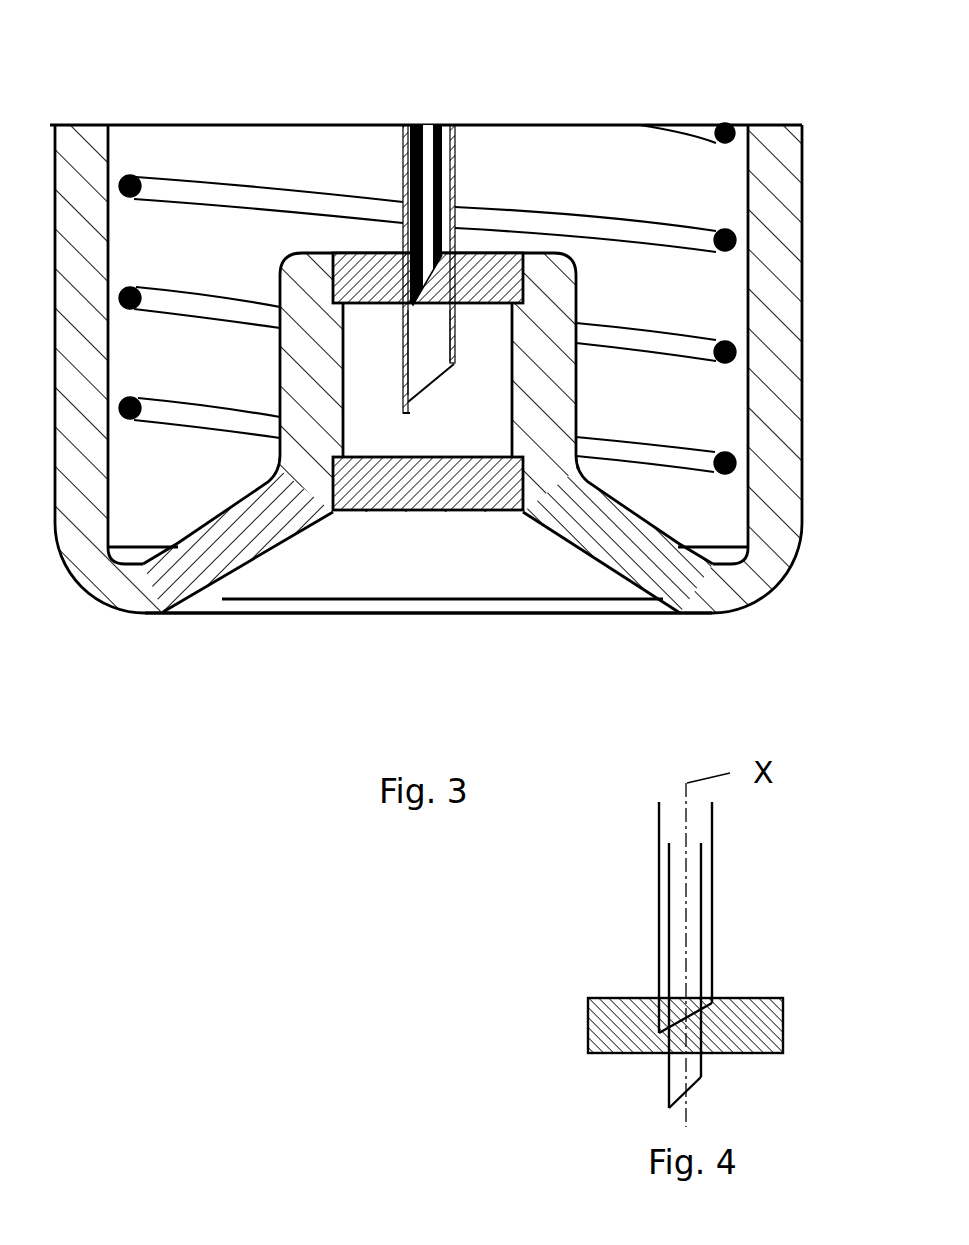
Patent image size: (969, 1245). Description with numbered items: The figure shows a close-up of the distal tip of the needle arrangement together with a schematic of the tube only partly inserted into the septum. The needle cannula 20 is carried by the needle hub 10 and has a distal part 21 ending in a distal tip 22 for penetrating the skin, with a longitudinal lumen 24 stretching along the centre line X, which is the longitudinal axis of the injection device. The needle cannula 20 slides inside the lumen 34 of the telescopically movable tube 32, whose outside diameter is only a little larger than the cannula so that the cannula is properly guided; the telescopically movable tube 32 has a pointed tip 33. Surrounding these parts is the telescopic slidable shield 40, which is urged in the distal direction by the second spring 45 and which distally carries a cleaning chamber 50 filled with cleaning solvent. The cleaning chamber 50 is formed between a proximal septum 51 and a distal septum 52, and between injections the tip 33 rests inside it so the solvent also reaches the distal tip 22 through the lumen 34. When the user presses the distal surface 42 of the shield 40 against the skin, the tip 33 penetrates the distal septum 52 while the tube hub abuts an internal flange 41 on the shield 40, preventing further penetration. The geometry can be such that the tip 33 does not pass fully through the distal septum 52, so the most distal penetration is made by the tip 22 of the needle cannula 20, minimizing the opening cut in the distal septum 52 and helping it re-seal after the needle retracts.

In FIG. 4, the needle hub 10 is at (703, 1067).
In FIG. 4, the needle cannula 20 is at (712, 925).
In FIG. 3, the distal part 21 is at (413, 132).
In FIG. 3, the distal tip 22 is at (415, 300).
In FIG. 4, the distal tip 22 is at (670, 1108).
In FIG. 3, the longitudinal lumen 24 is at (427, 137).
In FIG. 3, the telescopically movable tube 32 is at (455, 192).
In FIG. 3, the pointed tip 33 is at (402, 413).
In FIG. 4, the pointed tip 33 is at (660, 1033).
In FIG. 3, the lumen 34 is at (425, 357).
In FIG. 3, the telescopic slidable shield 40 is at (720, 590).
In FIG. 3, the internal flange 41 is at (552, 272).
In FIG. 3, the distal surface 42 is at (138, 612).
In FIG. 3, the second spring 45 is at (736, 242).
In FIG. 3, the cleaning chamber 50 is at (360, 397).
In FIG. 3, the proximal septum 51 is at (360, 278).
In FIG. 3, the distal septum 52 is at (463, 492).
In FIG. 4, the distal septum 52 is at (607, 1032).